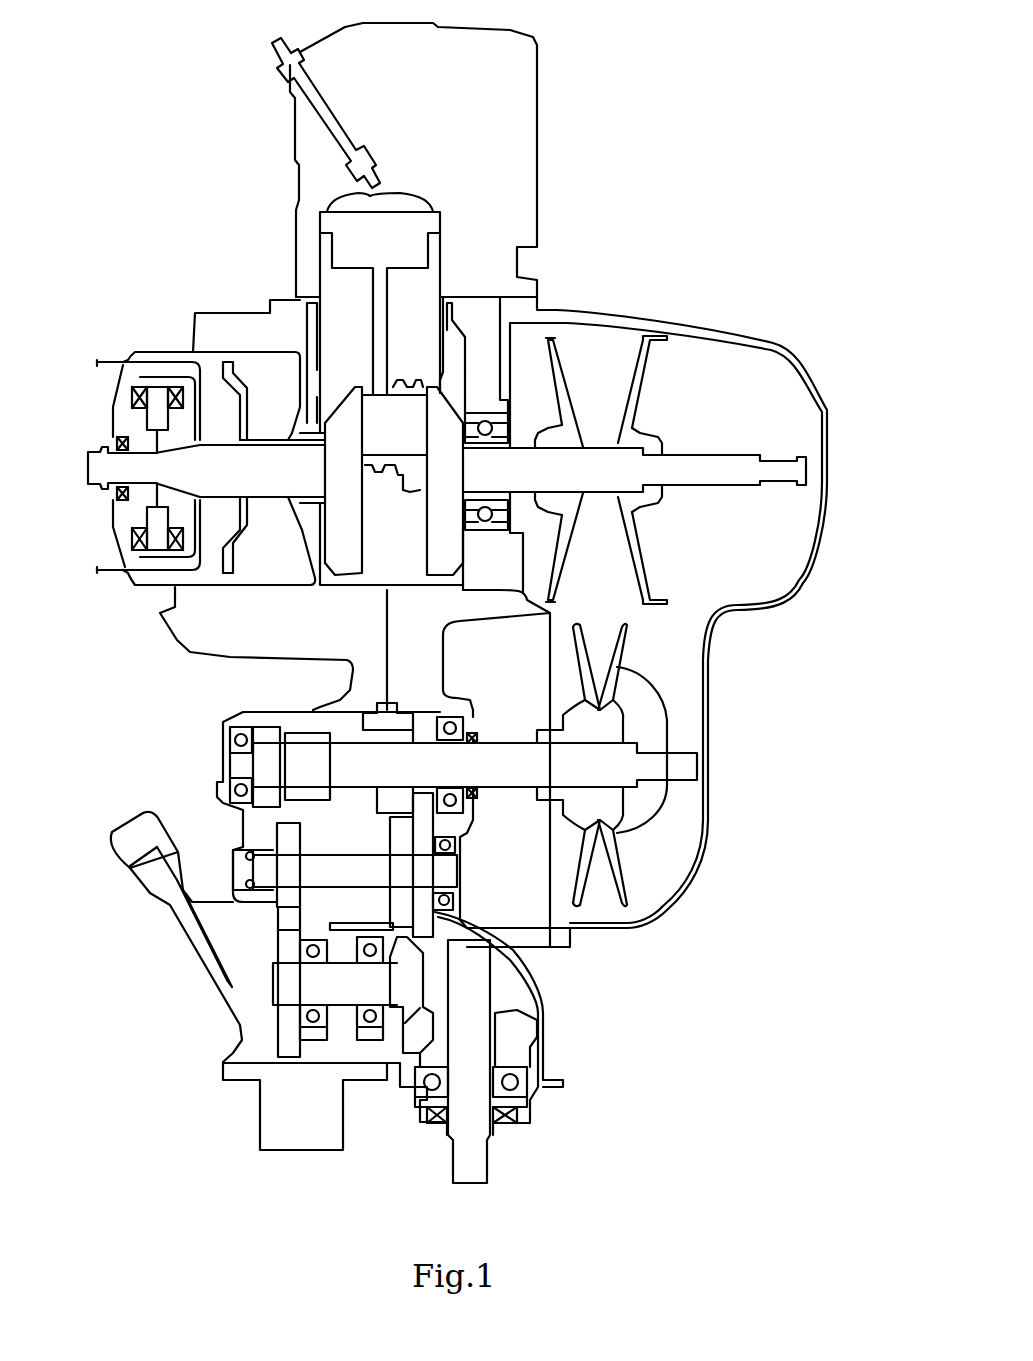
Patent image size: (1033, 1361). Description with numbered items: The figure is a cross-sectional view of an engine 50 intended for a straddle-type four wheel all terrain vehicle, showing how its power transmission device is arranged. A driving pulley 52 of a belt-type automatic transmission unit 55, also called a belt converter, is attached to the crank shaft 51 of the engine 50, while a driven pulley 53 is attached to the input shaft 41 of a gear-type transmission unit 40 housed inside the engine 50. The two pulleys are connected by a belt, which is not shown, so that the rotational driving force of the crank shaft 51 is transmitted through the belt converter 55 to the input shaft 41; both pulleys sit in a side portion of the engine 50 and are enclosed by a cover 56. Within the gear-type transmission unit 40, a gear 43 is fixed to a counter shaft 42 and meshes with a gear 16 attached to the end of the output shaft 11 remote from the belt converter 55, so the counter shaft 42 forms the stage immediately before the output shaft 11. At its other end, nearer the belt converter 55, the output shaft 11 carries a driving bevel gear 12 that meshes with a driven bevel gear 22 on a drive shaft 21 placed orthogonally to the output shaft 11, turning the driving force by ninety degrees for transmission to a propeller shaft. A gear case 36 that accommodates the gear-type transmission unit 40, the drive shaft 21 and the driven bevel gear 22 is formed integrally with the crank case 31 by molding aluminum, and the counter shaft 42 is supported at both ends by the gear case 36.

The engine 50 is at (634, 124).
The crank case 31 is at (490, 333).
The crank shaft 51 is at (507, 462).
The belt-type automatic transmission unit 55 is at (712, 462).
The driving pulley 52 is at (640, 578).
The cover 56 is at (828, 403).
The driven pulley 53 is at (617, 670).
The gear-type transmission unit 40 is at (331, 708).
The input shaft 41 is at (240, 767).
The counter shaft 42 is at (233, 862).
The gear 43 is at (277, 902).
The gear 16 is at (280, 935).
The output shaft 11 is at (277, 985).
The driving bevel gear 12 is at (453, 942).
The drive shaft 21 is at (480, 983).
The gear case 36 is at (540, 997).
The driven bevel gear 22 is at (530, 1033).